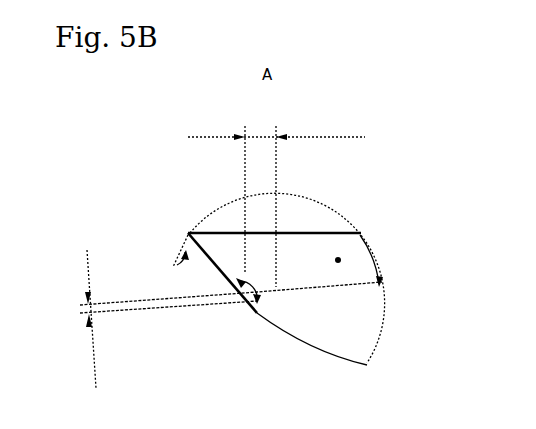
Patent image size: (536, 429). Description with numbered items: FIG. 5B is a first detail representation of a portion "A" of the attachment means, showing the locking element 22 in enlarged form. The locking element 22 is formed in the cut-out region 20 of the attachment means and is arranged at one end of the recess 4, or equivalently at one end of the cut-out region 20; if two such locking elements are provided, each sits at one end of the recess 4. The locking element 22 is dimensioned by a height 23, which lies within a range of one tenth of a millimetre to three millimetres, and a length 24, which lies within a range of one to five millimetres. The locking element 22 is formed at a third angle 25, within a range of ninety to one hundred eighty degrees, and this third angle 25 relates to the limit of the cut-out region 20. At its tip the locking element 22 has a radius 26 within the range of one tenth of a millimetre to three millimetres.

The recess 4 is at (218, 230).
The cut-out region 20 is at (338, 260).
The locking element 22 is at (253, 303).
The height 23 is at (231, 334).
The length 24 is at (276, 198).
The third angle 25 is at (330, 207).
The radius 26 is at (161, 222).